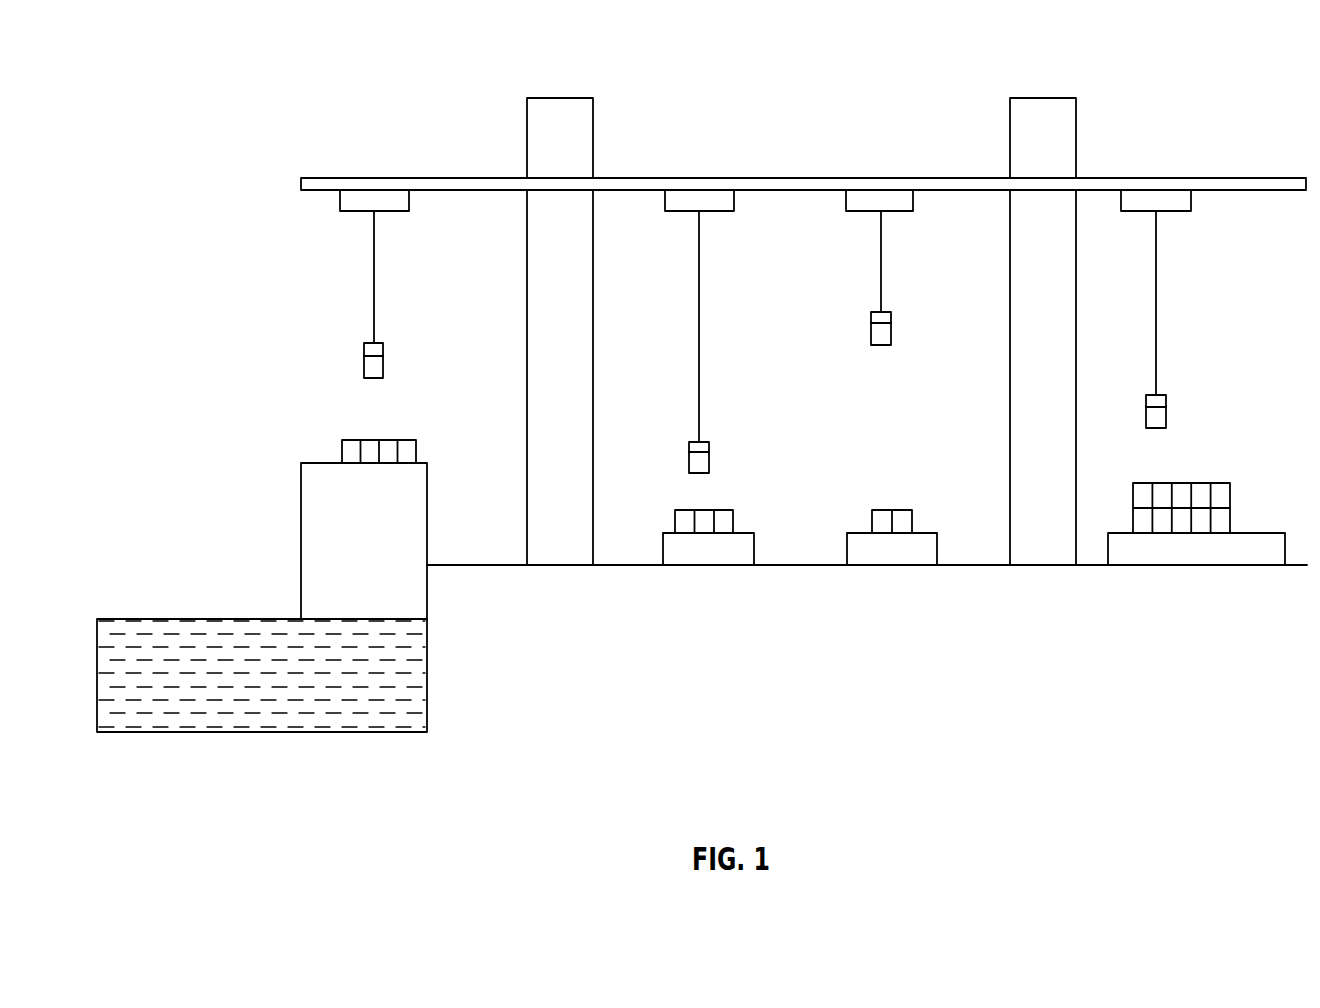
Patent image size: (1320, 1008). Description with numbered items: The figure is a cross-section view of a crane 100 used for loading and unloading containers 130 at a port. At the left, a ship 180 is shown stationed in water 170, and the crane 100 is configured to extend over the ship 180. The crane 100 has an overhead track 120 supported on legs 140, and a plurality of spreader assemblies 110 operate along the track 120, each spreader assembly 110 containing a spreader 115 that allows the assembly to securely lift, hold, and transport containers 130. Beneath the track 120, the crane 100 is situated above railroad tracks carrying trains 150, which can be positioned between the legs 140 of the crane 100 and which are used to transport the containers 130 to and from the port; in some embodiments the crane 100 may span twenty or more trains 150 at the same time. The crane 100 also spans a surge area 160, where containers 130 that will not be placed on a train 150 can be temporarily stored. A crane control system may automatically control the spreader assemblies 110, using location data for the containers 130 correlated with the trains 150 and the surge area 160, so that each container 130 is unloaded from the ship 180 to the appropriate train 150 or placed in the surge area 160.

The crane 100 is at (257, 82).
The spreader assembly 110 is at (352, 212).
The spreader 115 is at (870, 316).
The track 120 is at (458, 178).
The container 130 is at (870, 337).
The leg 140 is at (594, 128).
The train 150 is at (705, 555).
The surge area 160 is at (1182, 552).
The water 170 is at (139, 618).
The ship 180 is at (301, 527).